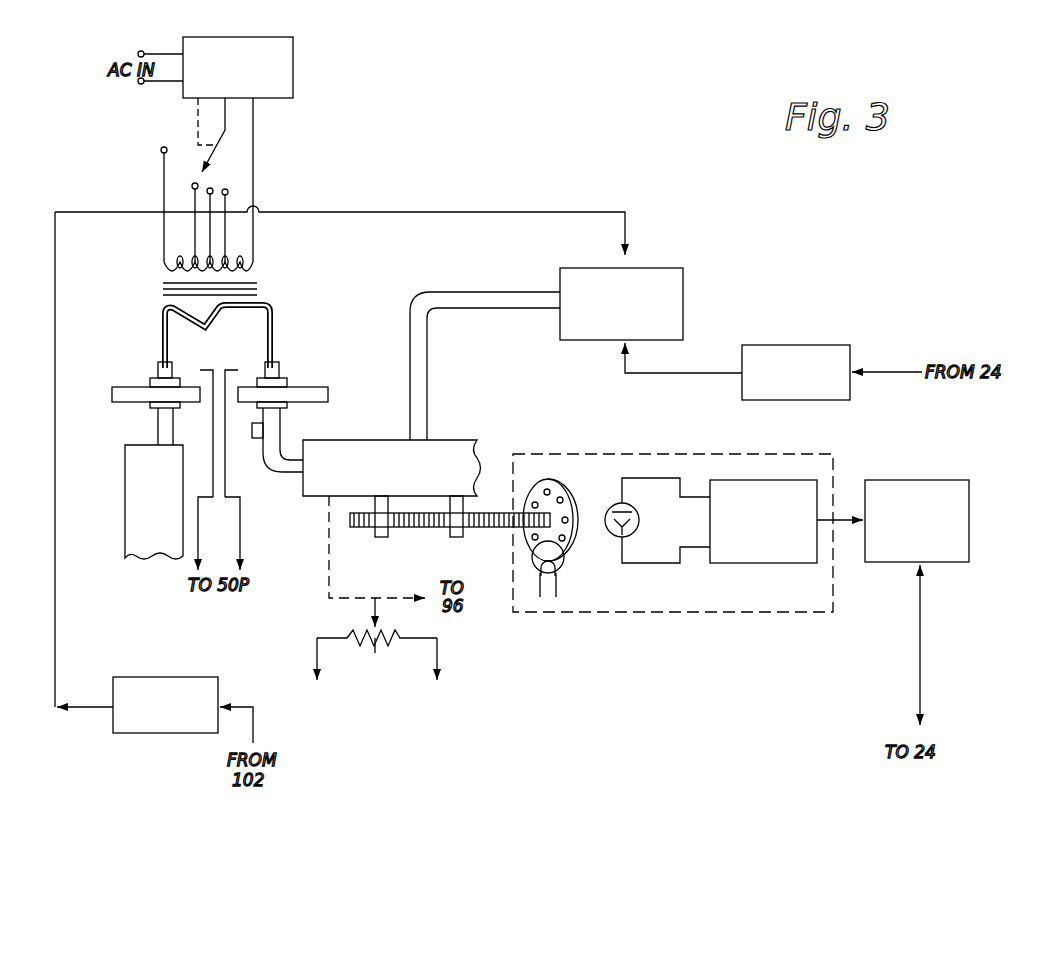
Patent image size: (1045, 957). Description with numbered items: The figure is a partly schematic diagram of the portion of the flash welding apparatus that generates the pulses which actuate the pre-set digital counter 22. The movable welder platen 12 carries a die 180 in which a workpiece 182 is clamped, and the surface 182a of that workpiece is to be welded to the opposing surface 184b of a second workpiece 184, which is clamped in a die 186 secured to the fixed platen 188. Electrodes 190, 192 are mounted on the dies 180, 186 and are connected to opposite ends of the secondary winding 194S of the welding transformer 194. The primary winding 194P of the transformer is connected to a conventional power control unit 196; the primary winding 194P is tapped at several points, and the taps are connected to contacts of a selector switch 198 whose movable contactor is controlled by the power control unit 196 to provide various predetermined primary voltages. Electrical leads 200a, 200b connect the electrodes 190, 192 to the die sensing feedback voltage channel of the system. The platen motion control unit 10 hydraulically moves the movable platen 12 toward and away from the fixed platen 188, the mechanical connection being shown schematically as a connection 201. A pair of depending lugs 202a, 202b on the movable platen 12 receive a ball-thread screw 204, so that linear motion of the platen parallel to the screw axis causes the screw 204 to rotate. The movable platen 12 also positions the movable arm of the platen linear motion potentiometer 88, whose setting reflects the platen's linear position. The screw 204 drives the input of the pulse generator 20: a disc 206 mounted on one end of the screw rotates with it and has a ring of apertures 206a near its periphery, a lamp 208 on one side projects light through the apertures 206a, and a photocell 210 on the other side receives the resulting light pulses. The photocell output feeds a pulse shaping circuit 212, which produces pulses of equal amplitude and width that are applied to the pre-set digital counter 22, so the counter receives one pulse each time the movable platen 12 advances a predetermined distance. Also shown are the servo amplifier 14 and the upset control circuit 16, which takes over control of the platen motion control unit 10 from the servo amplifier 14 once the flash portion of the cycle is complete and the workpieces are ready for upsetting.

The power control unit 196 is at (296, 67).
The selector switch 198 is at (232, 168).
The primary winding 194P is at (257, 272).
The welding transformer 194 is at (262, 290).
The secondary winding 194S is at (273, 328).
The electrode 192 is at (157, 365).
The die 186 is at (150, 380).
The second workpiece 184 is at (112, 395).
The opposing surface 184b is at (205, 392).
The surface 182a is at (234, 392).
The electrode 190 is at (278, 368).
The die 180 is at (287, 382).
The workpiece 182 is at (328, 395).
The fixed platen 188 is at (125, 485).
The electrical lead 200a is at (240, 528).
The electrical lead 200b is at (205, 530).
The movable welder platen 12 is at (343, 440).
The connection 201 is at (427, 358).
The depending lug 202a is at (380, 537).
The depending lug 202b is at (457, 537).
The screw 204 is at (415, 527).
The platen linear motion potentiometer 88 is at (377, 662).
The servo amplifier 14 is at (168, 677).
The platen motion control unit 10 is at (672, 268).
The upset control circuit 16 is at (793, 345).
The pulse generator 20 is at (664, 451).
The disc 206 is at (537, 482).
The apertures 206a is at (562, 488).
The lamp 208 is at (563, 566).
The photocell 210 is at (639, 520).
The pulse shaping circuit 212 is at (733, 480).
The pre-set digital counter 22 is at (969, 522).